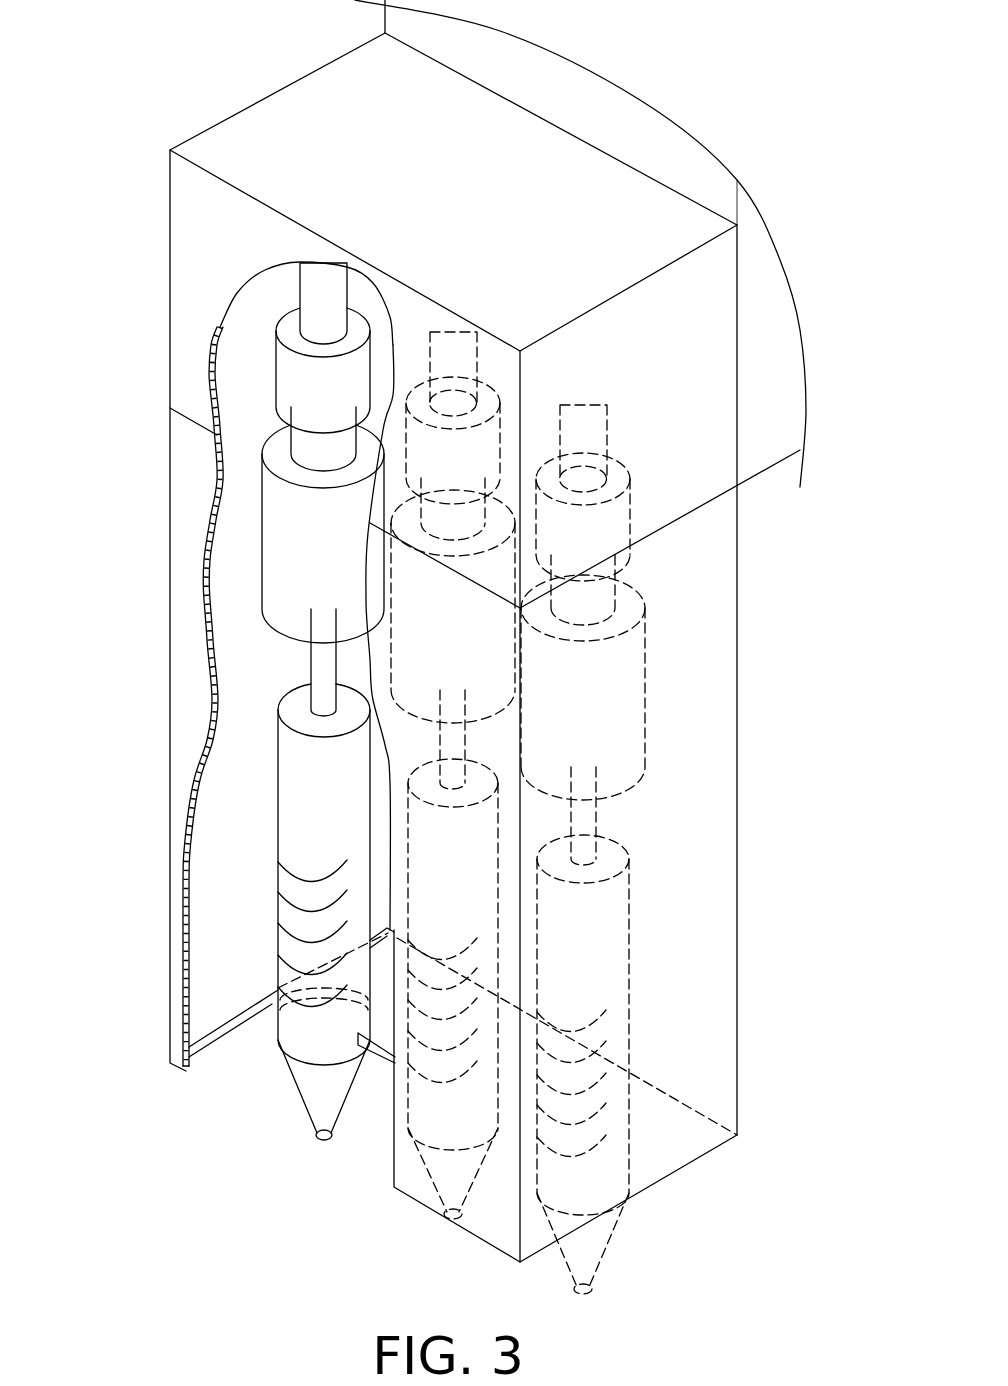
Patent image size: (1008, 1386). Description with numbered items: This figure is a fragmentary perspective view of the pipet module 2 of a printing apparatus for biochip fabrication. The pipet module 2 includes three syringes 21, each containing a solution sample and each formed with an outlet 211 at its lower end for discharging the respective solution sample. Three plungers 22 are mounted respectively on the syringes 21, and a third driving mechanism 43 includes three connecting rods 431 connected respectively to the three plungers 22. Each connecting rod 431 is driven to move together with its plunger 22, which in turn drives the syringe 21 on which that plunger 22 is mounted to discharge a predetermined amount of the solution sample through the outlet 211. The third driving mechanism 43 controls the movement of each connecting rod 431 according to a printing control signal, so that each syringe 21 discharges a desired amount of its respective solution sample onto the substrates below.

The pipet module 2 is at (212, 1098).
The syringe 21 is at (240, 1012).
The outlet 211 is at (322, 1143).
The plunger 22 is at (277, 368).
The third driving mechanism 43 is at (200, 219).
The connecting rod 431 is at (317, 285).